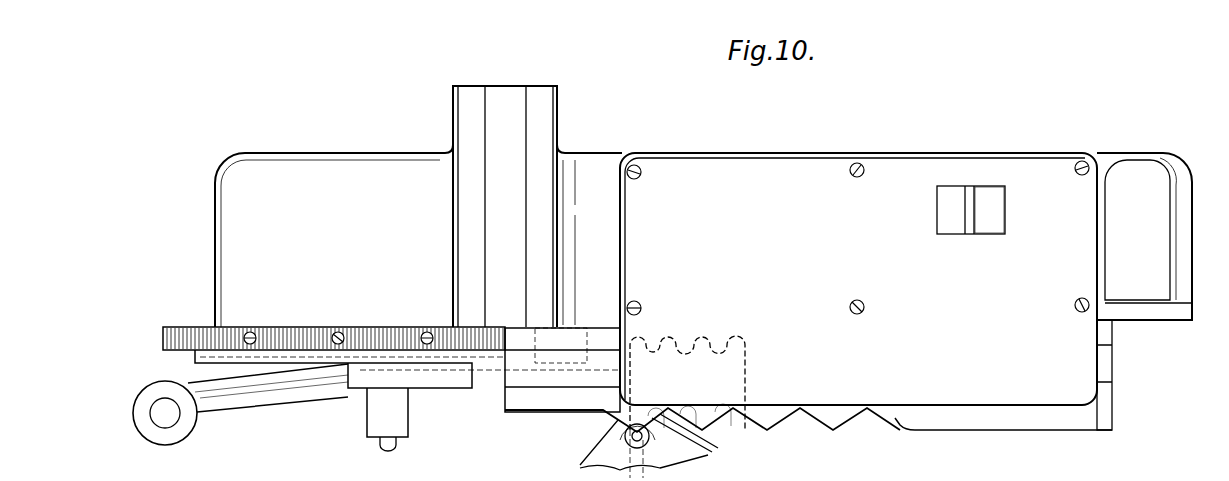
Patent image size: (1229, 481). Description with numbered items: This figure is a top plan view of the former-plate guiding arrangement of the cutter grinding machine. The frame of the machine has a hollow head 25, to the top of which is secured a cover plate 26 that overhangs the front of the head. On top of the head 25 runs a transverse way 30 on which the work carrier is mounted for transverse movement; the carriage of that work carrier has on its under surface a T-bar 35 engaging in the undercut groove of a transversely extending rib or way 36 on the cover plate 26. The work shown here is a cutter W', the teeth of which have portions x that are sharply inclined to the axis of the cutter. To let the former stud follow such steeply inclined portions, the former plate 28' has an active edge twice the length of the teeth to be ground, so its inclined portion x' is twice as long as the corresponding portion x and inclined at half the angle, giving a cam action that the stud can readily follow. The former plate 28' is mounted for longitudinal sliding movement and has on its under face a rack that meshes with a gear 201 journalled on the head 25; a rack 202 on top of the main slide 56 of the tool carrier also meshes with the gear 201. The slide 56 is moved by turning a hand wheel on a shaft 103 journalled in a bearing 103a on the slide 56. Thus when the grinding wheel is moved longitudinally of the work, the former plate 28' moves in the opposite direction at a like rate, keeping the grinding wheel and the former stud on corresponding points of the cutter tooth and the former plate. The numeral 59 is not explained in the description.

The hollow head 25 is at (218, 226).
The cover plate 26 is at (912, 160).
The way 30 is at (510, 127).
The T-bar 35 is at (970, 190).
The rib or way 36 is at (1000, 195).
The main slide 56 is at (256, 355).
The roller 59 is at (145, 430).
The shaft 103 is at (385, 446).
The bearing 103a is at (375, 413).
The gear 201 is at (535, 350).
The rack 202 is at (180, 327).
The former plate 28' is at (1003, 434).
The portions of cutter teeth X is at (687, 388).
The inclined portion of former plate X' is at (655, 442).
The cutter W' is at (702, 427).